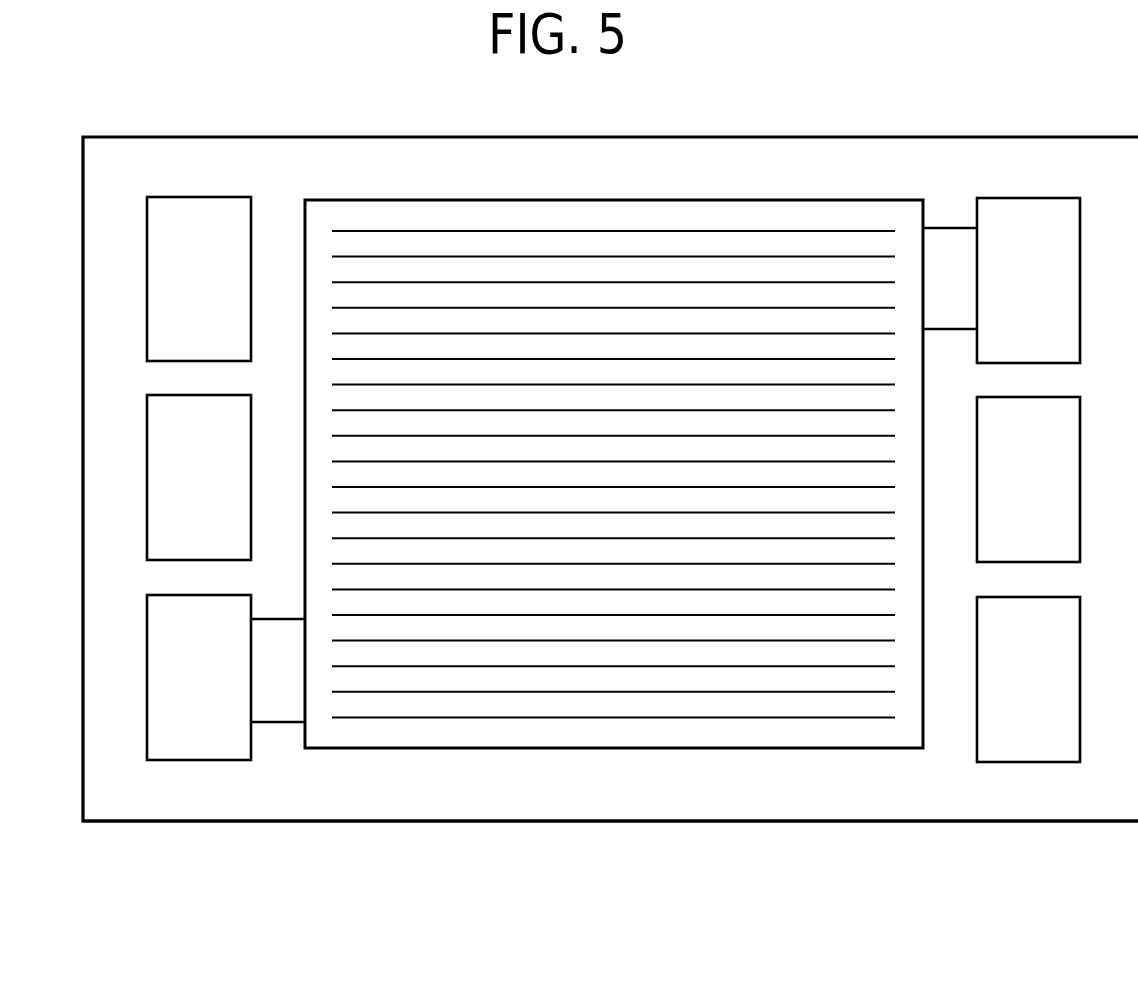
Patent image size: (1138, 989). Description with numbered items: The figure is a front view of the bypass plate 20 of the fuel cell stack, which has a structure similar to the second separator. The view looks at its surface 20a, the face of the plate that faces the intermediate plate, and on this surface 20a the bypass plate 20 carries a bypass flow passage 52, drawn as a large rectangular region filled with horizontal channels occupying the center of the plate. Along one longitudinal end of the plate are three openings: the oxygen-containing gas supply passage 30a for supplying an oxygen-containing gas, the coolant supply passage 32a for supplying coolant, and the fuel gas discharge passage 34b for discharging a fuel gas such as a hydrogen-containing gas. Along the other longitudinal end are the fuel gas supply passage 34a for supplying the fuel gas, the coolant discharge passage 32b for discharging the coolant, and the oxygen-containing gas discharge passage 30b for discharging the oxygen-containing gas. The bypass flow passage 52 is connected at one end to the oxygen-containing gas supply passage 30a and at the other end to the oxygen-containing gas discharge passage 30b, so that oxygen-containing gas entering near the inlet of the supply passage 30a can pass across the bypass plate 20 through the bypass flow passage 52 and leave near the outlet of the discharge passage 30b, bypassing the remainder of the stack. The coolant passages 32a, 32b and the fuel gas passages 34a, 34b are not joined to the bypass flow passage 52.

The bypass plate 20 is at (995, 110).
The surface 20a is at (469, 803).
The bypass flow passage 52 is at (617, 232).
The oxygen-containing gas supply passage 30a is at (1001, 280).
The oxygen-containing gas discharge passage 30b is at (226, 677).
The coolant supply passage 32a is at (1028, 479).
The coolant discharge passage 32b is at (199, 477).
The fuel gas supply passage 34a is at (199, 279).
The fuel gas discharge passage 34b is at (1028, 679).